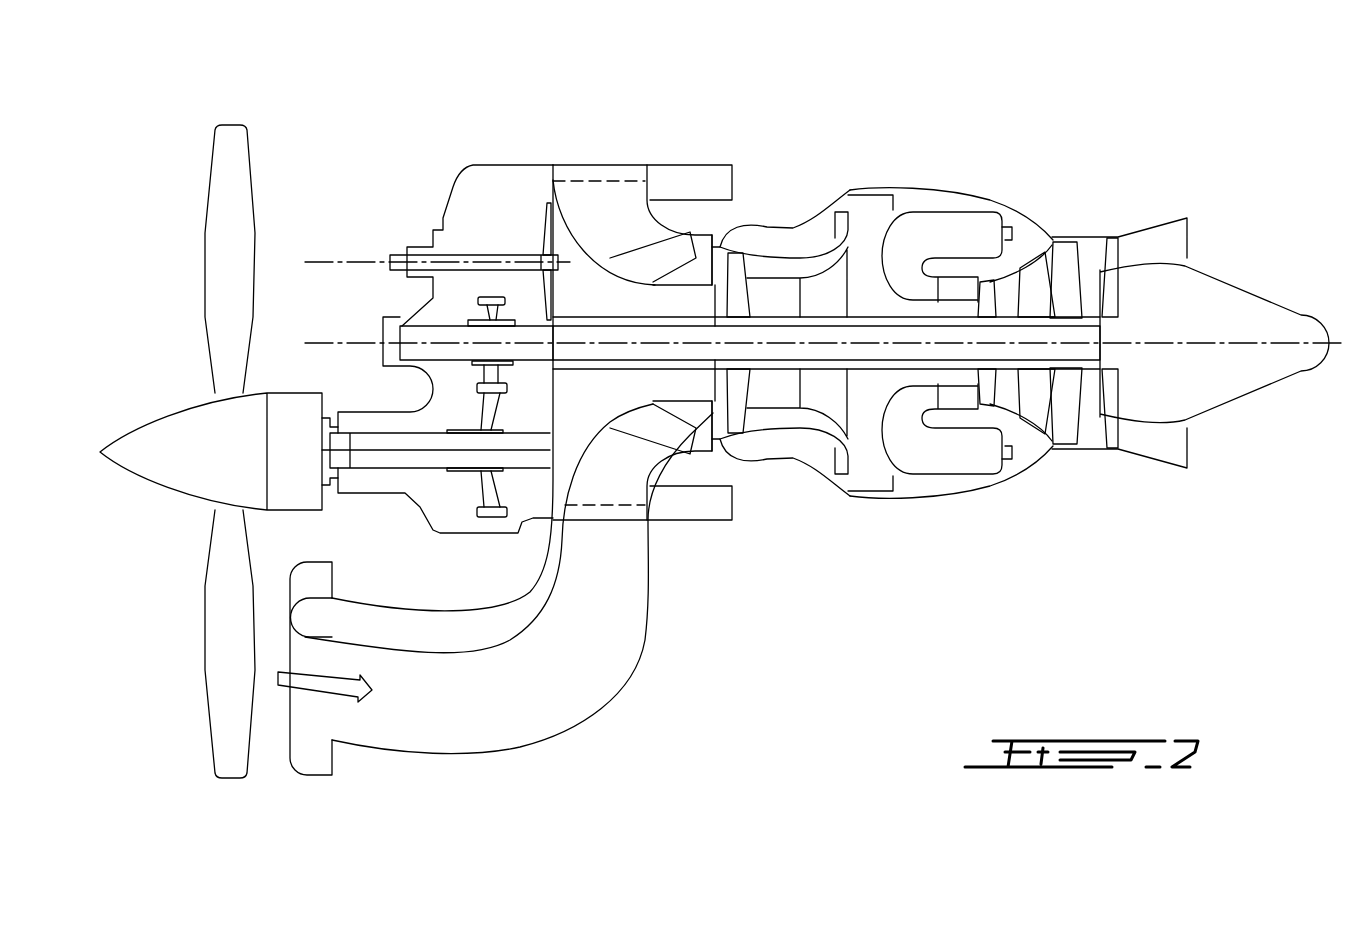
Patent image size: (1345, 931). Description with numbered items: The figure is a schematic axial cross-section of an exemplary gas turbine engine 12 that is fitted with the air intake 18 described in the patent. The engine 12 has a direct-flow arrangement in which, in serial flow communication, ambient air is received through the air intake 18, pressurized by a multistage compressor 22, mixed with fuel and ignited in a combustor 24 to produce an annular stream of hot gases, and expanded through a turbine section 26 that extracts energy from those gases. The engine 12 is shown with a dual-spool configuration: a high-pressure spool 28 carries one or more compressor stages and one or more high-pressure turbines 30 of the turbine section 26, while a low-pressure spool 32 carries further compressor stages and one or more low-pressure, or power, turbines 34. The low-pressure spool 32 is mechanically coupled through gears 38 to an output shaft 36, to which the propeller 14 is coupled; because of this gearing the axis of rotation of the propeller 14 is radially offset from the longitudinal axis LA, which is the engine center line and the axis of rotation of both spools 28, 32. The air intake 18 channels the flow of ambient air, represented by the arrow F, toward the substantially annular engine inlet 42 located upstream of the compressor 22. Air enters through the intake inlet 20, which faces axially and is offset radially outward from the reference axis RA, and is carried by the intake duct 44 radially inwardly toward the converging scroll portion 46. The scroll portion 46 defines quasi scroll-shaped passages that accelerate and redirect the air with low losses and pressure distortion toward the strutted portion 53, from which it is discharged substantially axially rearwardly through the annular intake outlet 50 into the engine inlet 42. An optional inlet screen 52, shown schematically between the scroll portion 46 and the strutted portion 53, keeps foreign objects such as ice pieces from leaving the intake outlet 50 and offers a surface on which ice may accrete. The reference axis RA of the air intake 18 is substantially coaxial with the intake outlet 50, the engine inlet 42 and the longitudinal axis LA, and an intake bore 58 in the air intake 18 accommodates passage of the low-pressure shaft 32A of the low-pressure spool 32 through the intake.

The gas turbine engine 12 is at (722, 426).
The propeller 14 is at (232, 293).
The air intake 18 is at (633, 697).
The intake inlet 20 is at (307, 712).
The multistage compressor 22 is at (772, 273).
The combustor 24 is at (950, 235).
The turbine section 26 is at (1035, 293).
The high-pressure spool 28 is at (863, 317).
The high-pressure turbine 30 is at (1007, 290).
The low-pressure spool 32 is at (707, 429).
The low-pressure shaft 32A is at (417, 333).
The low-pressure turbine 34 is at (1072, 273).
The output shaft 36 is at (392, 460).
The gears 38 is at (480, 410).
The engine inlet 42 is at (723, 228).
The intake duct 44 is at (535, 710).
The scroll portion 46 is at (618, 176).
The intake outlet 50 is at (718, 415).
The inlet screen 52 is at (578, 178).
The strutted portion 53 is at (648, 515).
The intake bore 58 is at (672, 368).
The flow of air F is at (320, 682).
The reference axis RA is at (1252, 338).
The longitudinal axis LA is at (825, 287).